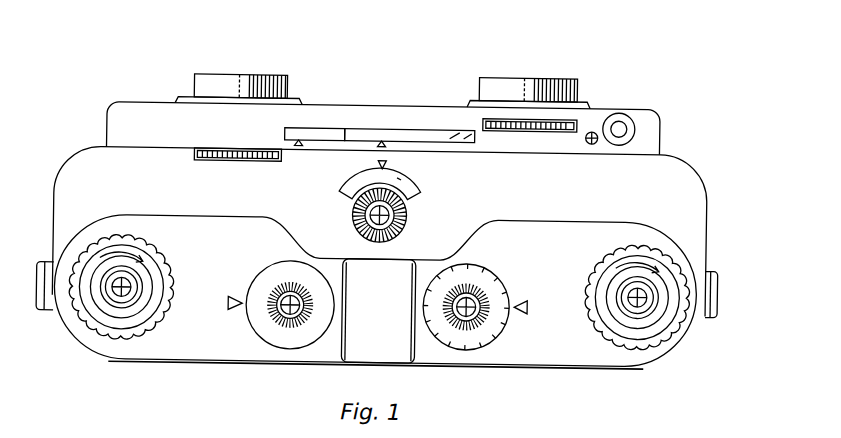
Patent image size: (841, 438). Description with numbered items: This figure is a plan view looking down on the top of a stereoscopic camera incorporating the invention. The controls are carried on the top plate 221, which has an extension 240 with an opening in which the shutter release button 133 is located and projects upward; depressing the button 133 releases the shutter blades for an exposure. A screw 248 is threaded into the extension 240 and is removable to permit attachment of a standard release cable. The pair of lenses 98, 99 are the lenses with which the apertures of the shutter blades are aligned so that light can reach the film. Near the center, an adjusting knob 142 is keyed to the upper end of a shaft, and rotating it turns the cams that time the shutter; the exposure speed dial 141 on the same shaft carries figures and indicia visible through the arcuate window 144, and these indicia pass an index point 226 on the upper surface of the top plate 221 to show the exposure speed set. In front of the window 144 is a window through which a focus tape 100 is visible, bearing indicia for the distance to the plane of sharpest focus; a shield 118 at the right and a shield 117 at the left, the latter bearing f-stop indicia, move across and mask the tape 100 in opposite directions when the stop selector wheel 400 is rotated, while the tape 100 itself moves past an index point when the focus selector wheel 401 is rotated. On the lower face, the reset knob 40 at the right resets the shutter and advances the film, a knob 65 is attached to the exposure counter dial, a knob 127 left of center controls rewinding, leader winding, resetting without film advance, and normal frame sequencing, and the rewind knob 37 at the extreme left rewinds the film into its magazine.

The rewind knob 37 is at (80, 317).
The reset knob 40 is at (680, 326).
The knob 65 is at (500, 326).
The lens 98 is at (216, 81).
The lens 99 is at (530, 78).
The focus tape 100 is at (345, 129).
The shield 117 is at (320, 129).
The shield 118 is at (455, 130).
The knob 127 is at (275, 324).
The shutter release button 133 is at (617, 112).
The exposure speed dial 141 is at (420, 190).
The knob 142 is at (410, 222).
The arcuate window 144 is at (398, 177).
The top plate 221 is at (683, 193).
The index point 226 is at (375, 160).
The extension of the top plate 240 is at (665, 136).
The screw 248 is at (590, 142).
The stop selector wheel 400 is at (205, 163).
The focus selector wheel 401 is at (529, 130).